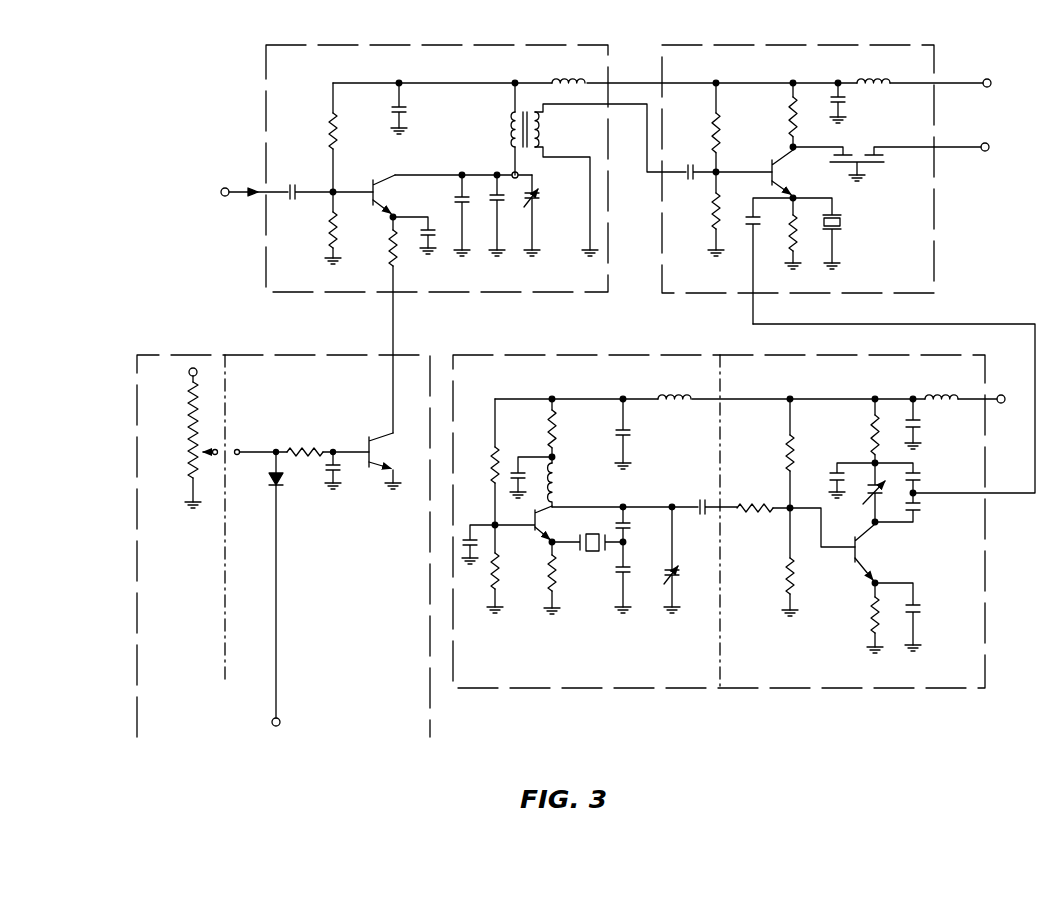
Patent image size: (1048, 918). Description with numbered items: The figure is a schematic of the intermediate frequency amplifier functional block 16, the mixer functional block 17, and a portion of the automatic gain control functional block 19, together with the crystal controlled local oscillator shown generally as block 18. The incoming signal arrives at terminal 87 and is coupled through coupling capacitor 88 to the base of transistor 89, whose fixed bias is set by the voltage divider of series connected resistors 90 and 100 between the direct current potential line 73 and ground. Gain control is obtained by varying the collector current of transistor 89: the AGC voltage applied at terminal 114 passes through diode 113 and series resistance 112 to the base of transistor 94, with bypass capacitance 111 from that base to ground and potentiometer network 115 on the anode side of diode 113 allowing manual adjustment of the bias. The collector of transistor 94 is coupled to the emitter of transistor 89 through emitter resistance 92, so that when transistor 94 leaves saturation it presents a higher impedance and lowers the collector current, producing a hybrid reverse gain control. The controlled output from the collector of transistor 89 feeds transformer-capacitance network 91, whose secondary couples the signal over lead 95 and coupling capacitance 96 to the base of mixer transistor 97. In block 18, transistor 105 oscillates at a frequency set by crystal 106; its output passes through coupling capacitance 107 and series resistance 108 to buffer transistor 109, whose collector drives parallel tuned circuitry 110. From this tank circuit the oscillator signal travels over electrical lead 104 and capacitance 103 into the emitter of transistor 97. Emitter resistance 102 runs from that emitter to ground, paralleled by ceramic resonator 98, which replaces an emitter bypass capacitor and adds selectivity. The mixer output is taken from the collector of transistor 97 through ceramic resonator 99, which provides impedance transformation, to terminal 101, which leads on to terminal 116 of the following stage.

The intermediate frequency amplifier functional block 16 is at (488, 45).
The mixer functional block 17 is at (808, 45).
The local oscillator functional block 18 is at (652, 353).
The automatic gain control functional block 19 is at (262, 353).
The direct current potential line 73 is at (686, 82).
The terminal 87 is at (225, 188).
The coupling capacitor 88 is at (291, 200).
The transistor 89 is at (380, 175).
The resistor 90 is at (330, 130).
The transformer-capacitance network 91 is at (508, 168).
The emitter resistance 92 is at (392, 244).
The transistor 94 is at (364, 437).
The lead 95 is at (647, 143).
The coupling capacitance 96 is at (690, 180).
The transistor 97 is at (776, 154).
The ceramic resonator 98 is at (843, 222).
The ceramic resonator 99 is at (862, 145).
The resistor 100 is at (328, 238).
The terminal 101 is at (985, 143).
The emitter resistance 102 is at (792, 240).
The capacitance 103 is at (752, 229).
The electrical lead 104 is at (960, 324).
The transistor 105 is at (527, 543).
The crystal 106 is at (591, 552).
The coupling capacitance 107 is at (702, 502).
The series resistance 108 is at (752, 510).
The transistor 109 is at (848, 558).
The parallel tuned circuitry 110 is at (864, 492).
The bypass capacitance 111 is at (342, 475).
The series resistance 112 is at (295, 448).
The diode 113 is at (280, 485).
The terminal 114 is at (280, 720).
The potentiometer network 115 is at (180, 445).
The terminal 116 is at (993, 162).